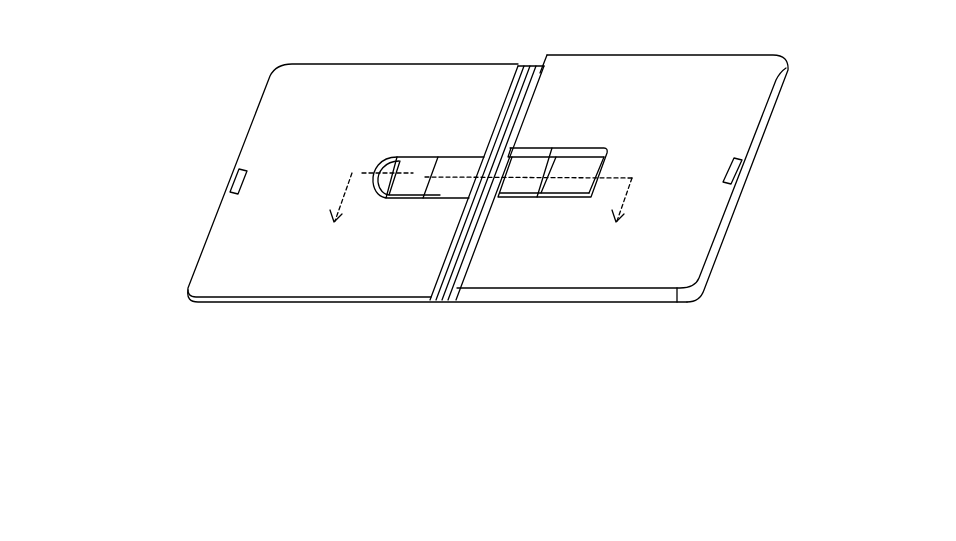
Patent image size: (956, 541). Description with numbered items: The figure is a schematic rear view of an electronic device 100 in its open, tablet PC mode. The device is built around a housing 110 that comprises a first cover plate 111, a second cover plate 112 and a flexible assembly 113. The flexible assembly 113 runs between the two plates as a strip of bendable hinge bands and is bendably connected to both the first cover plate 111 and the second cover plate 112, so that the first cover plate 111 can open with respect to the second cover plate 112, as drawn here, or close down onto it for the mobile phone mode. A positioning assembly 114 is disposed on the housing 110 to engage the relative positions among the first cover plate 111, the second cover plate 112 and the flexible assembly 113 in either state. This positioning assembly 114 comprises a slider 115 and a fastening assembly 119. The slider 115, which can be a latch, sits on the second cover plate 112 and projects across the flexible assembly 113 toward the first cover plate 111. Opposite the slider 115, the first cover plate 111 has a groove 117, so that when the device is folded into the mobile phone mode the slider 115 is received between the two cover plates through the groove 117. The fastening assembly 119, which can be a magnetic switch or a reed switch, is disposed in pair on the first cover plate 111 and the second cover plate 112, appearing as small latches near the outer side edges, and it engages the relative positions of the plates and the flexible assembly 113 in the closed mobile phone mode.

The electronic device 100 is at (87, 26).
The housing 110 is at (565, 383).
The first cover plate 111 is at (518, 272).
The second cover plate 112 is at (323, 282).
The flexible assembly 113 is at (456, 316).
The positioning assembly 114 is at (149, 100).
The slider 115 is at (452, 167).
The groove 117 is at (530, 145).
The fastening assembly 119 is at (238, 168).